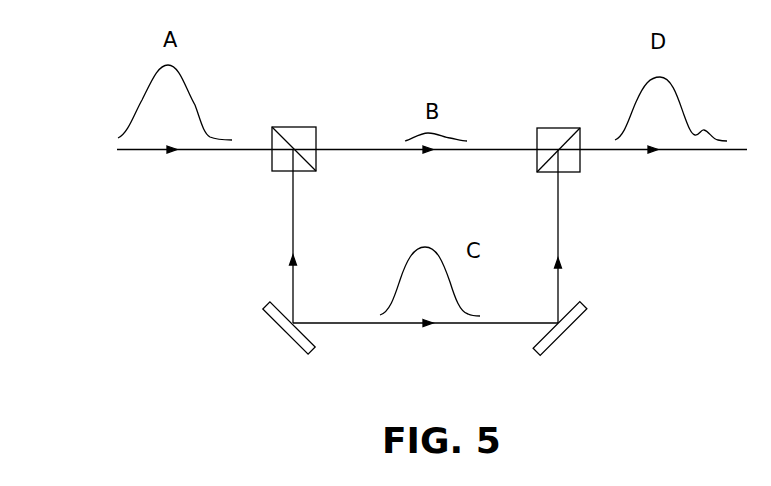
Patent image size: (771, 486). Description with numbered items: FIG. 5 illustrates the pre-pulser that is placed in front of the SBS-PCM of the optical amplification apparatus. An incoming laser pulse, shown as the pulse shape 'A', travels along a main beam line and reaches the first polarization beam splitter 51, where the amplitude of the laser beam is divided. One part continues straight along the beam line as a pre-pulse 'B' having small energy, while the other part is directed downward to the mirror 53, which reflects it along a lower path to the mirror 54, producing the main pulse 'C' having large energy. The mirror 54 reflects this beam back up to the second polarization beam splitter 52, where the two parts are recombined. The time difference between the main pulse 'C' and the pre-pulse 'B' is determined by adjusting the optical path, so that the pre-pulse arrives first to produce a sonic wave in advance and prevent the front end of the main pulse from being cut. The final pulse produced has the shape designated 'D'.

The polarization beam splitter 51 is at (293, 127).
The polarization beam splitter 52 is at (557, 128).
The first mirror 53 is at (267, 307).
The second mirror 54 is at (582, 306).